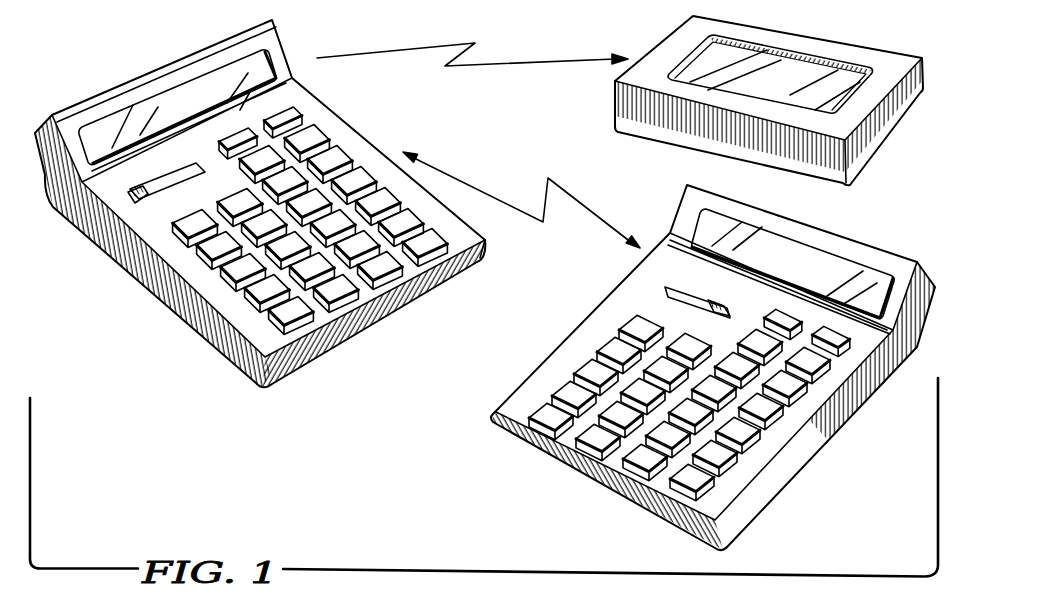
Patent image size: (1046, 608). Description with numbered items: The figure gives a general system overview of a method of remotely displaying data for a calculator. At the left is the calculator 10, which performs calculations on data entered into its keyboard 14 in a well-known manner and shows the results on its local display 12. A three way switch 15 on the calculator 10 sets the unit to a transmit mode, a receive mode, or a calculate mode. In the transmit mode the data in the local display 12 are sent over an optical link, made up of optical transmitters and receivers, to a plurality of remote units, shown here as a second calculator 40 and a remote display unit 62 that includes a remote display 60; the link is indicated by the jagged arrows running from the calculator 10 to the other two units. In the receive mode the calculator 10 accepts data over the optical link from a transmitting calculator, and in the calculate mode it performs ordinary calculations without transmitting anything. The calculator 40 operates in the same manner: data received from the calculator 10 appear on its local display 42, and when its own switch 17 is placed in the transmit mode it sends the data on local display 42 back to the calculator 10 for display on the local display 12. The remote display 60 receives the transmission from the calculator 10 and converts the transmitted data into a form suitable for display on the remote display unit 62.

The calculator 10 is at (260, 203).
The local display 12 is at (107, 100).
The keyboard 14 is at (380, 157).
The three way switch 15 is at (140, 186).
The switch 17 is at (715, 296).
The calculator 40 is at (713, 367).
The local display 42 is at (822, 268).
The remote display 60 is at (773, 100).
The remote display unit 62 is at (843, 77).